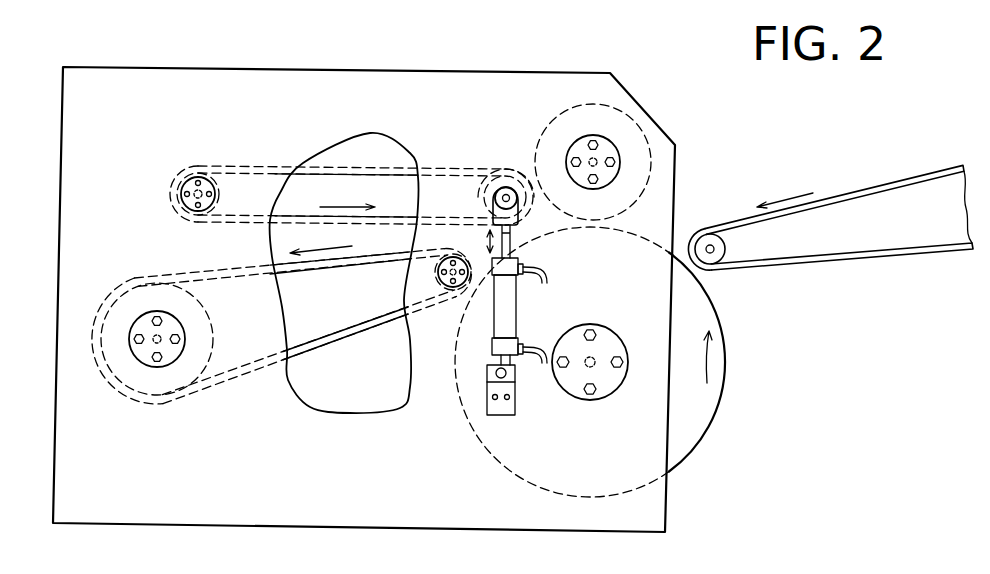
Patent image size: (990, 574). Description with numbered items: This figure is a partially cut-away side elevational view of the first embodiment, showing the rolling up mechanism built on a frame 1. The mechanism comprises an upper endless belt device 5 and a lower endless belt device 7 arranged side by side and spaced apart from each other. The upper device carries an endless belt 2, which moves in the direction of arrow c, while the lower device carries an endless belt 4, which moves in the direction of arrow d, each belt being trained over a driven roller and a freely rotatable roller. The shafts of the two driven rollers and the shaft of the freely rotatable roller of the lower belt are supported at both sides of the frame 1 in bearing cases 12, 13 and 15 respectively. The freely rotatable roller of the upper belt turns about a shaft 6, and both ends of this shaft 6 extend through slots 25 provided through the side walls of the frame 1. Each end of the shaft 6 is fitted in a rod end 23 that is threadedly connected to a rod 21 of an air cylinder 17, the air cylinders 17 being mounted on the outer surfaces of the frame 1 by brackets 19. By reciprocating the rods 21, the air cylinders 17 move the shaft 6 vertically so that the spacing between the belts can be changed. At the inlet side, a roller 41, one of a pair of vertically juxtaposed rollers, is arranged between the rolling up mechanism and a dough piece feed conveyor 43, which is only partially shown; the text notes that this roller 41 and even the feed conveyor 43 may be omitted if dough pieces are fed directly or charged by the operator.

The frame 1 is at (392, 72).
The endless belt 2 is at (366, 172).
The endless belt 4 is at (377, 322).
The upper endless belt device 5 is at (322, 165).
The shaft 6 is at (527, 205).
The lower endless belt device 7 is at (344, 343).
The bearing case 12 is at (205, 207).
The bearing case 13 is at (167, 350).
The bearing case 15 is at (445, 287).
The air cylinder 17 is at (505, 302).
The bracket 19 is at (508, 405).
The rod 21 is at (512, 238).
The rod end 23 is at (493, 197).
The slot 25 is at (503, 181).
The roller 41 is at (728, 365).
The dough piece feed conveyor 43 is at (884, 172).